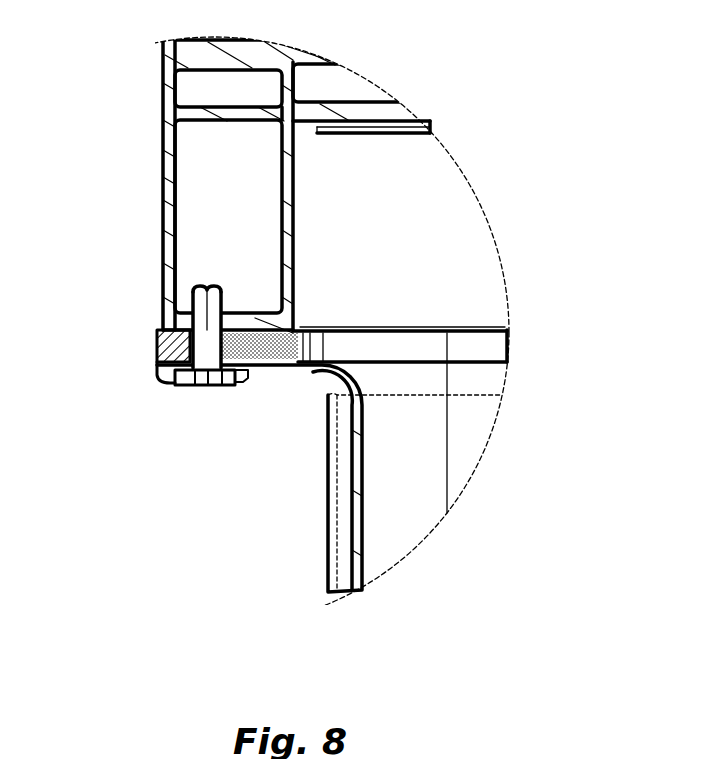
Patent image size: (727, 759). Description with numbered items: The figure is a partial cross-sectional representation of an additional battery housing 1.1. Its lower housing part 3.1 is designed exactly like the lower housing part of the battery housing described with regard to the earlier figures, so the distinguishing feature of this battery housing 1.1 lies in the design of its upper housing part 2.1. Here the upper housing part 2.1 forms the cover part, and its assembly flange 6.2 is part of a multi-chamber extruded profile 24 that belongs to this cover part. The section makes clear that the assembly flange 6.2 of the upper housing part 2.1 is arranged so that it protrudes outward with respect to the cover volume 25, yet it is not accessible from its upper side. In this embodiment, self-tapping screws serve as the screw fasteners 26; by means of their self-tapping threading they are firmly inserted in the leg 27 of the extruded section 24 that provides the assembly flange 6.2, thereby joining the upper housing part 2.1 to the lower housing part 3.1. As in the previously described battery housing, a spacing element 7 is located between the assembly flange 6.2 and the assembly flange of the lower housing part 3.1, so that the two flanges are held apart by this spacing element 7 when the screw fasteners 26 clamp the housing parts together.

The battery housing 1.1 is at (490, 157).
The upper housing part 2.1 is at (143, 140).
The multi-chamber extruded profile 24 is at (297, 178).
The cover volume 25 is at (400, 363).
The leg 27 is at (240, 310).
The screw fasteners 26 is at (195, 390).
The spacing element 7 is at (148, 335).
The assembly flange 6.2 is at (297, 353).
The lower housing part 3.1 is at (322, 500).